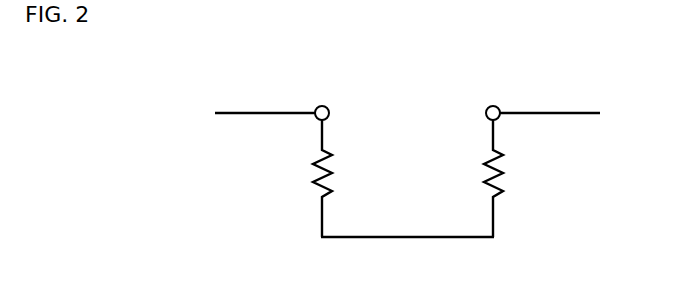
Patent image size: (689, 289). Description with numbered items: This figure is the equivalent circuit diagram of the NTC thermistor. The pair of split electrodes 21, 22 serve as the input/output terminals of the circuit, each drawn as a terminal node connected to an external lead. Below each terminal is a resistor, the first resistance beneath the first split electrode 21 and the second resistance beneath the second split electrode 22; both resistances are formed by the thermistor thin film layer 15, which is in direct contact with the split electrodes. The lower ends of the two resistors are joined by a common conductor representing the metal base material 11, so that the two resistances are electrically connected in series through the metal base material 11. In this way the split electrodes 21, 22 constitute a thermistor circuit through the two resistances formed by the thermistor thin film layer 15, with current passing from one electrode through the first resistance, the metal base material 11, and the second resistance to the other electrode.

The split electrode 21 is at (323, 103).
The split electrode 22 is at (495, 103).
The thermistor thin film layer 15 is at (441, 178).
The metal base material 11 is at (409, 239).